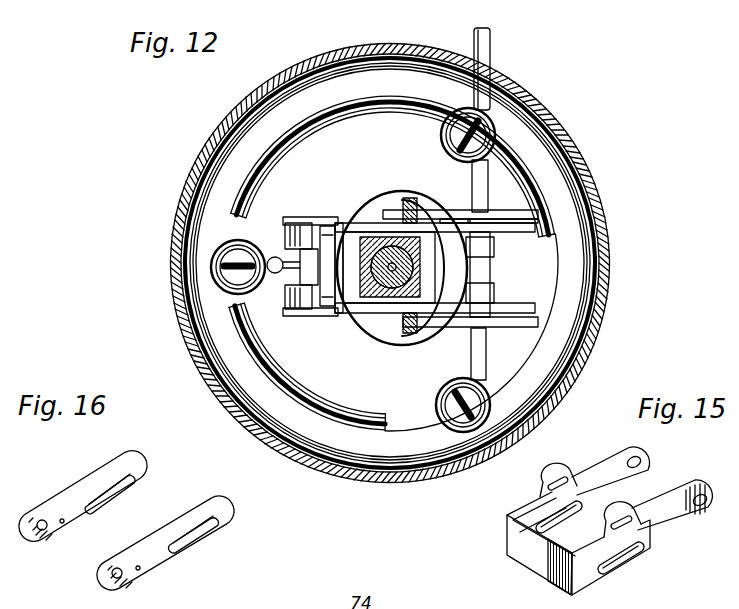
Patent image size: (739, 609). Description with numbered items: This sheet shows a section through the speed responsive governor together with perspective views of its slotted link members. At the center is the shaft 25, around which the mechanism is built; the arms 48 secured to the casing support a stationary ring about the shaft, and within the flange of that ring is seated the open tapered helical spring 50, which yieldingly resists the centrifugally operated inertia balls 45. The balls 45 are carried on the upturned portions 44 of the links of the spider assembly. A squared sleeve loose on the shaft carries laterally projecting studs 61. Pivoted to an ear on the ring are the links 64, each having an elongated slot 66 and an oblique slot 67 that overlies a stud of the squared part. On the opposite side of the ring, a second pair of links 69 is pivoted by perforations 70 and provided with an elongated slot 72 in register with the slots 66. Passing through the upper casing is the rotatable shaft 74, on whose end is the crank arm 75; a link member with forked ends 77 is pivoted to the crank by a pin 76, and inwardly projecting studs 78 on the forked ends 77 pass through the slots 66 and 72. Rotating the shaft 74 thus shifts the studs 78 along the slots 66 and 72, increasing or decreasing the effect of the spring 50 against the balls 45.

In FIG. 12, the shaft 25 is at (385, 232).
In FIG. 12, the upturned portion of link 44 is at (214, 272).
In FIG. 12, the inertia ball 45 is at (211, 262).
In FIG. 12, the arm 48 is at (233, 307).
In FIG. 12, the helical spring 50 is at (297, 221).
In FIG. 12, the stud 61 is at (383, 228).
In FIG. 12, the link 64 is at (495, 295).
In FIG. 15, the link 64 is at (660, 510).
In FIG. 15, the elongated slot 66 is at (508, 514).
In FIG. 12, the oblique slot 67 is at (412, 198).
In FIG. 15, the oblique slot 67 is at (546, 484).
In FIG. 12, the link 69 is at (350, 314).
In FIG. 16, the link 69 is at (142, 548).
In FIG. 12, the perforation 70 is at (320, 215).
In FIG. 16, the perforation 70 is at (40, 532).
In FIG. 16, the elongated slot 72 is at (135, 478).
In FIG. 12, the rotatable shaft 74 is at (490, 36).
In FIG. 12, the crank arm 75 is at (540, 317).
In FIG. 12, the pin 76 is at (400, 225).
In FIG. 12, the forked end of link 77 is at (445, 318).
In FIG. 12, the stud 78 is at (405, 333).